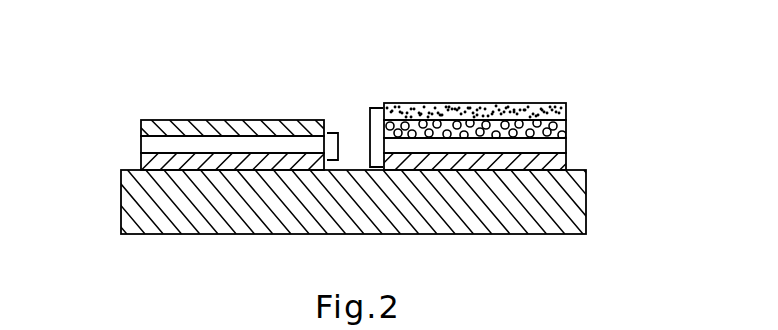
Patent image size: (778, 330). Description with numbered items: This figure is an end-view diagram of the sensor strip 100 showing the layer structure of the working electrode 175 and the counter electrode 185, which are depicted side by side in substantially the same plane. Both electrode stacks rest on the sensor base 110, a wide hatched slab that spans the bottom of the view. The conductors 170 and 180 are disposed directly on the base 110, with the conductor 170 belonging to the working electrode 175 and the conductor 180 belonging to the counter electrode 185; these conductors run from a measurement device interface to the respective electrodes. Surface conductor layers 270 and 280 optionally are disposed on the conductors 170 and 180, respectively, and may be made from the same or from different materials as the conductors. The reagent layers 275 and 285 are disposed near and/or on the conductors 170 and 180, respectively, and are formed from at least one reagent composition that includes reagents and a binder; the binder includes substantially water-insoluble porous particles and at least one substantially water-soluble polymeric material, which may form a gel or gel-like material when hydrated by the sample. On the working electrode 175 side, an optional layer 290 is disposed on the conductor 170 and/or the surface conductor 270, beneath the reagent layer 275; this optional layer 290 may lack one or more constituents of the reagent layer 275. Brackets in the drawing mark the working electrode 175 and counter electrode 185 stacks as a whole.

The sensor strip 100 is at (373, 160).
The sensor base 110 is at (287, 219).
The conductor 170 is at (567, 161).
The working electrode 175 is at (368, 148).
The conductor 180 is at (141, 166).
The counter electrode 185 is at (345, 142).
The surface conductor layer 270 is at (567, 145).
The reagent layer 275 is at (470, 102).
The surface conductor layer 280 is at (141, 145).
The reagent layer 285 is at (202, 119).
The optional layer 290 is at (567, 123).